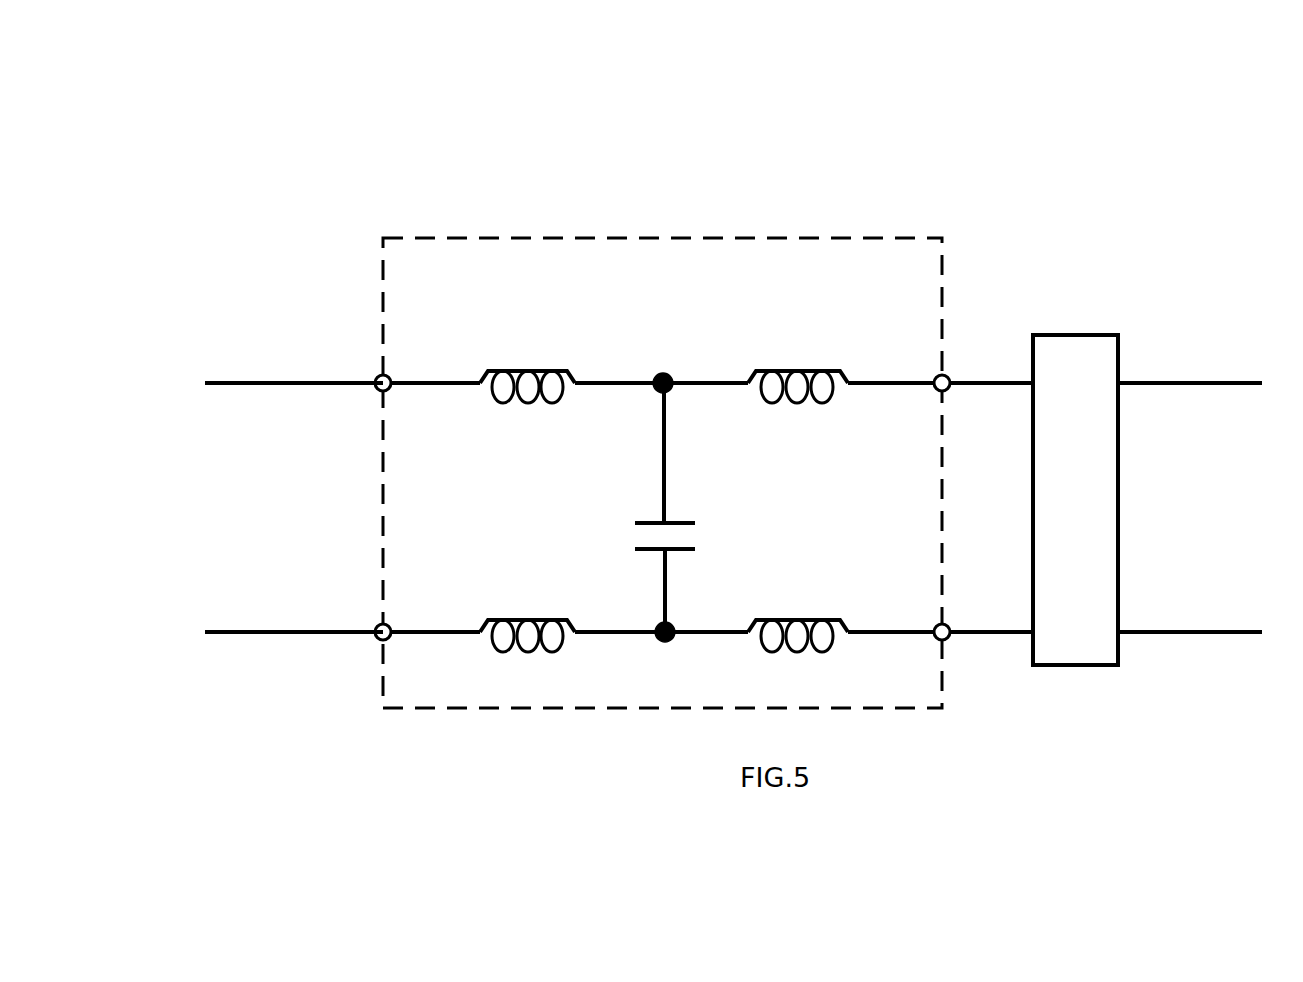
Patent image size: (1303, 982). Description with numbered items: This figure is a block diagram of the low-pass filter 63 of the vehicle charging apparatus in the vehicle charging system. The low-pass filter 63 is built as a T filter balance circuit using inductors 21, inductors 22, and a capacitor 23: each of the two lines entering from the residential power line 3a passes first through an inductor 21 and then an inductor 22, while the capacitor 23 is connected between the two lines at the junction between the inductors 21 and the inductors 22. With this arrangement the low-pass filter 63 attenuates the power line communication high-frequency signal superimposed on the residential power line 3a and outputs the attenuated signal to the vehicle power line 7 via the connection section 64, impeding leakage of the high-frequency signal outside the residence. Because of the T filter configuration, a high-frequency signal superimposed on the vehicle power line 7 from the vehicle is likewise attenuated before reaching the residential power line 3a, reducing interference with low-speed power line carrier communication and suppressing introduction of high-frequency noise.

The residential power line 3a is at (301, 632).
The low-pass filter 63 is at (502, 237).
The inductors 21 is at (523, 372).
The inductors 22 is at (800, 372).
The capacitor 23 is at (688, 523).
The connection section 64 is at (1070, 334).
The vehicle power line 7 is at (1155, 632).